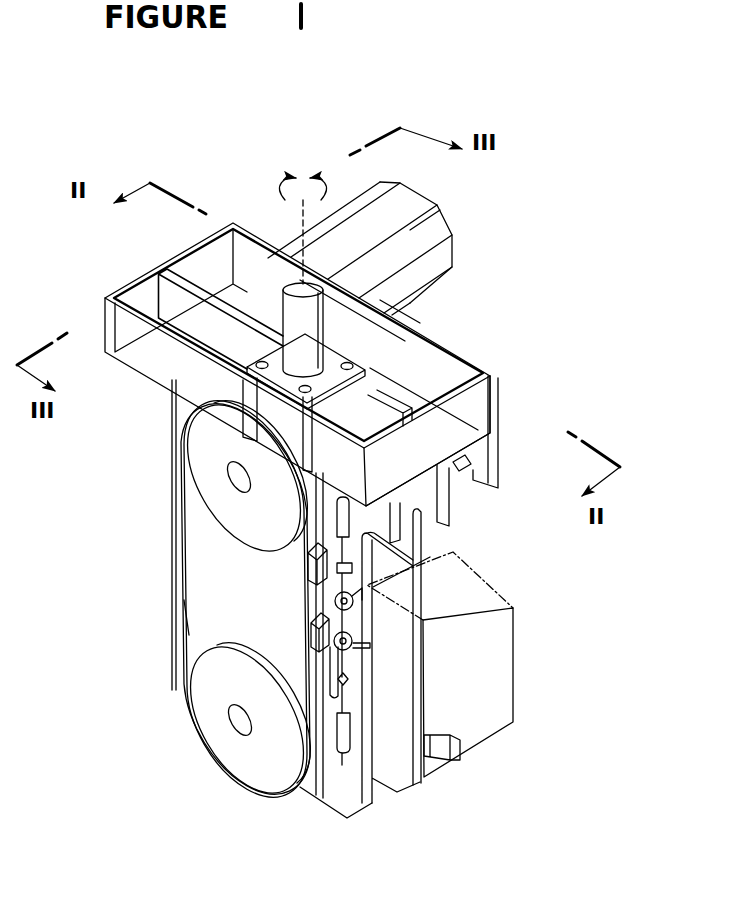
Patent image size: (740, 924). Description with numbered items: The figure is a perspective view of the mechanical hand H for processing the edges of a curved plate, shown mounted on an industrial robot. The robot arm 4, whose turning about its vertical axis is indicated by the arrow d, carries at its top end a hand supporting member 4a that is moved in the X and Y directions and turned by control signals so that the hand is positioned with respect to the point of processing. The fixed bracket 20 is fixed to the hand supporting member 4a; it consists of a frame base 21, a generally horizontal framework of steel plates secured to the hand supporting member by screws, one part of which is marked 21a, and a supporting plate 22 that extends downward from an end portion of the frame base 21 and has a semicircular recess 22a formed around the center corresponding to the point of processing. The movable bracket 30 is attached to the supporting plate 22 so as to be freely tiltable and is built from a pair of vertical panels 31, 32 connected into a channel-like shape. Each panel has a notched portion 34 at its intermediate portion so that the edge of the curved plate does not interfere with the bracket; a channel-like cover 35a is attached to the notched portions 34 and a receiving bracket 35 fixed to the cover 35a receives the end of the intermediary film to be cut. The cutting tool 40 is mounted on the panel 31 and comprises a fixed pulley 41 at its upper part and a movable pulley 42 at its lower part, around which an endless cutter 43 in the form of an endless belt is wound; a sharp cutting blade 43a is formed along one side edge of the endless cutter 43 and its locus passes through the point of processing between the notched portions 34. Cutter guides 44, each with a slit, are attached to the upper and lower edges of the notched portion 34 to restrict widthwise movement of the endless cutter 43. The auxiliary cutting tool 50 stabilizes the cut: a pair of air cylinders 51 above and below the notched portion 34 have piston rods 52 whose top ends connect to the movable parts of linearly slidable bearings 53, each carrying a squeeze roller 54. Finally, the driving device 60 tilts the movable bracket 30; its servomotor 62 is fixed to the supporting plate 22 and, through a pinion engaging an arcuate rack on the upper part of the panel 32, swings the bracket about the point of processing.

The robot arm 4 is at (287, 317).
The hand supporting member 4a is at (273, 373).
The rotation direction d is at (303, 173).
The mechanical hand H is at (152, 502).
The fixed bracket 20 is at (474, 358).
The frame base 21 is at (397, 347).
The frame rail portion 21a is at (395, 310).
The supporting plate 22 is at (500, 410).
The semicircular recess 22a is at (440, 730).
The movable bracket 30 is at (303, 800).
The panel 31 is at (333, 793).
The panel 32 is at (400, 790).
The notched portion 34 is at (255, 612).
The receiving bracket 35 is at (510, 700).
The cover 35a is at (400, 575).
The cutting tool 40 is at (203, 758).
The fixed pulley 41 is at (198, 448).
The movable pulley 42 is at (210, 715).
The endless cutter 43 is at (187, 650).
The cutting blade 43a is at (228, 615).
The cutter guide 44 is at (313, 567).
The auxiliary cutting tool 50 is at (333, 740).
The air cylinder 51 is at (340, 730).
The piston rod 52 is at (338, 695).
The linearly slidable bearing 53 is at (362, 695).
The squeeze roller 54 is at (400, 625).
The driving device 60 is at (458, 228).
The servomotor 62 is at (403, 208).